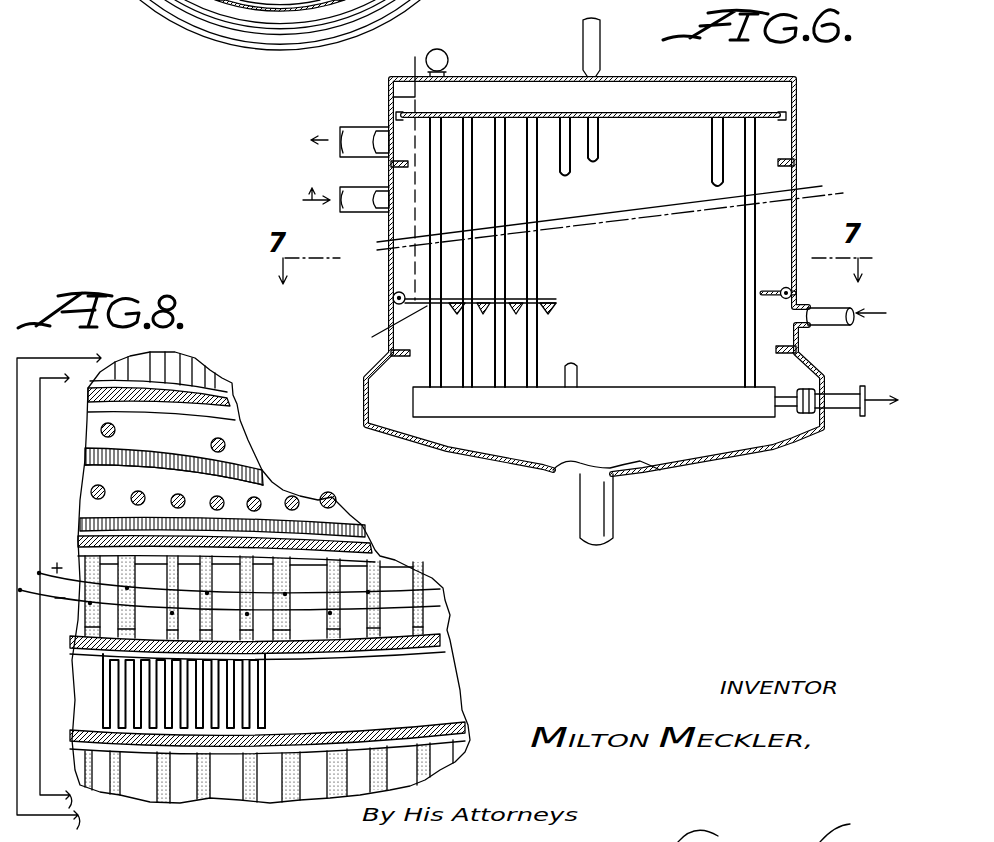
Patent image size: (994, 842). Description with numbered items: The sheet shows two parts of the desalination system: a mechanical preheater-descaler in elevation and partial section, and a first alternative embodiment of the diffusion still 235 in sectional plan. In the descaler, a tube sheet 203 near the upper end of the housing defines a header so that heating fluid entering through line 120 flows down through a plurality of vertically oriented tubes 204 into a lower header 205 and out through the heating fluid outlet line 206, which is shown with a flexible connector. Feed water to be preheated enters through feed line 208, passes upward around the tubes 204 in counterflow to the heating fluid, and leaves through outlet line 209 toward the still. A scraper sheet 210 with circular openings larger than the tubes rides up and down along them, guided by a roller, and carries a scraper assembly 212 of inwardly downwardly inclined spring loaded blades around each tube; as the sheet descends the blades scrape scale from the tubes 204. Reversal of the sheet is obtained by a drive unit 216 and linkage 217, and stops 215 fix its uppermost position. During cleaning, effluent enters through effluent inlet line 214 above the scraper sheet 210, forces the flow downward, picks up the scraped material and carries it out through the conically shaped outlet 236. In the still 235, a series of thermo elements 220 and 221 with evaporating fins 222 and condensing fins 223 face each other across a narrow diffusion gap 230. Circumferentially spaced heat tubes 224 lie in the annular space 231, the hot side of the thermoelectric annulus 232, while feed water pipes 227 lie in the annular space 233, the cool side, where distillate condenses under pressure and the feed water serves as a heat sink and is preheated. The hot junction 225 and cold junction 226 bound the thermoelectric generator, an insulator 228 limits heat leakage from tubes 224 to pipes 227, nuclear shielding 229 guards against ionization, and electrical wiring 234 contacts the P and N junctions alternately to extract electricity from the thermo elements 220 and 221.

In FIG. 6, the line 120 is at (598, 50).
In FIG. 6, the drive unit 216 is at (448, 60).
In FIG. 6, the linkage 217 is at (391, 96).
In FIG. 6, the outlet line 209 is at (357, 127).
In FIG. 6, the stops 215 is at (390, 166).
In FIG. 6, the effluent inlet line 214 is at (353, 213).
In FIG. 6, the tubes 204 is at (541, 197).
In FIG. 6, the scraper sheet 210 is at (446, 300).
In FIG. 6, the tube sheet 203 is at (770, 112).
In FIG. 6, the scraper assembly 212 is at (396, 293).
In FIG. 6, the lower header 205 is at (612, 387).
In FIG. 6, the feed line 208 is at (836, 326).
In FIG. 6, the heating fluid outlet line 206 is at (848, 411).
In FIG. 6, the conically shaped outlet 236 is at (613, 522).
In FIG. 8, the electrical wiring 234 is at (64, 451).
In FIG. 8, the annular space 233 is at (192, 450).
In FIG. 8, the feed water pipes 227 is at (226, 447).
In FIG. 8, the insulator 228 is at (266, 472).
In FIG. 8, the nuclear shielding 229 is at (268, 478).
In FIG. 8, the annular space 231 is at (255, 498).
In FIG. 8, the tubes 224 is at (337, 503).
In FIG. 8, the hot junction 225 is at (221, 526).
In FIG. 8, the thermoelectric annulus 232 is at (307, 578).
In FIG. 8, the diffusion still 235 is at (448, 588).
In FIG. 8, the cold junction 226 is at (310, 649).
In FIG. 8, the thermo elements 220 is at (340, 624).
In FIG. 8, the evaporating fins 222 is at (250, 688).
In FIG. 8, the condensing fins 223 is at (258, 720).
In FIG. 8, the thermo elements 221 is at (297, 778).
In FIG. 8, the diffusion gap 230 is at (447, 727).